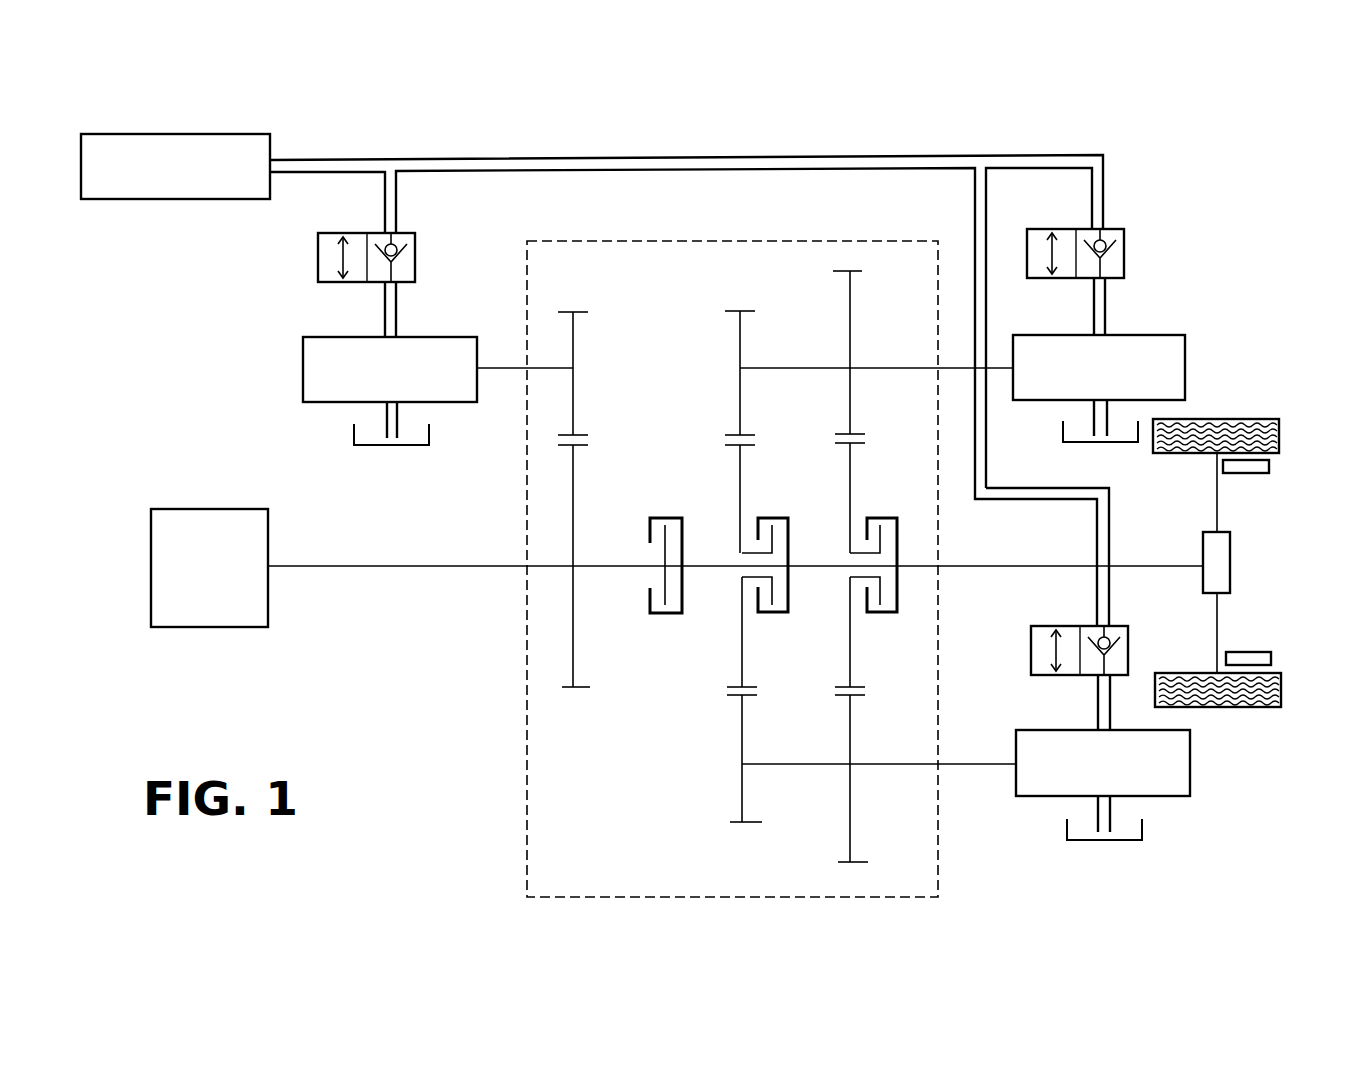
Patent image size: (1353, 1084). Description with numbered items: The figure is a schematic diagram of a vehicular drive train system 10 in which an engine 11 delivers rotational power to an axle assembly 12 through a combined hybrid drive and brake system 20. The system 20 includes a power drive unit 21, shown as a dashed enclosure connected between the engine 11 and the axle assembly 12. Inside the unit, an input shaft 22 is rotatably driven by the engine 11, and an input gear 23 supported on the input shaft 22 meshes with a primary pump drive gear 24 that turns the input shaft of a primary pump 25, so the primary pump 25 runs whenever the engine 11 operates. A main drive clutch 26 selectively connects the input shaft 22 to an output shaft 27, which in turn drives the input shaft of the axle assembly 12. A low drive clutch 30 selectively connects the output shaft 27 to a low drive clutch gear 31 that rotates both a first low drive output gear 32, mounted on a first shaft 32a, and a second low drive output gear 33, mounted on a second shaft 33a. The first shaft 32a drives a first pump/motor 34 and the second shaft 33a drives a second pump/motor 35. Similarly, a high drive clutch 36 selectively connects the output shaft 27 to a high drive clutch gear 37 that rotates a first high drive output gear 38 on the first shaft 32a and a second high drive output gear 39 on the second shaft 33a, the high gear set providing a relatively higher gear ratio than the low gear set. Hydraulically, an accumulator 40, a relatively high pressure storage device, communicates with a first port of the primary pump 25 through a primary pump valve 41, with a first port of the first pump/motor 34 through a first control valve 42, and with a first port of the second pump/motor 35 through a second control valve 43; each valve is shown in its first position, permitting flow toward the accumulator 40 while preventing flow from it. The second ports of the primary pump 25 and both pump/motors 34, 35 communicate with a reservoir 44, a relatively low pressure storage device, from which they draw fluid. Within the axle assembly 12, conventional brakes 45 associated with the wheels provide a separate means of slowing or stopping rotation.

The drive train system 10 is at (444, 762).
The engine 11 is at (158, 540).
The axle assembly 12 is at (1222, 558).
The combined hybrid drive and brake system 20 is at (1176, 152).
The power drive unit 21 is at (632, 240).
The input shaft 22 is at (355, 570).
The input gear 23 is at (578, 653).
The primary pump drive gear 24 is at (573, 342).
The primary pump 25 is at (303, 372).
The main drive clutch 26 is at (662, 518).
The output shaft 27 is at (990, 560).
The low drive clutch 30 is at (770, 515).
The low drive clutch gear 31 is at (743, 652).
The first low drive output gear 32 is at (740, 335).
The first shaft 32a is at (883, 368).
The second low drive output gear 33 is at (743, 792).
The second shaft 33a is at (882, 767).
The first pump/motor 34 is at (1178, 352).
The second pump/motor 35 is at (1190, 757).
The high drive clutch 36 is at (885, 515).
The high drive clutch gear 37 is at (850, 643).
The first high drive output gear 38 is at (848, 302).
The second high drive output gear 39 is at (852, 822).
The accumulator 40 is at (162, 188).
The primary pump valve 41 is at (323, 255).
The first control valve 42 is at (1117, 258).
The second control valve 43 is at (1032, 653).
The reservoir 44 is at (370, 449).
The brakes 45 is at (1263, 468).